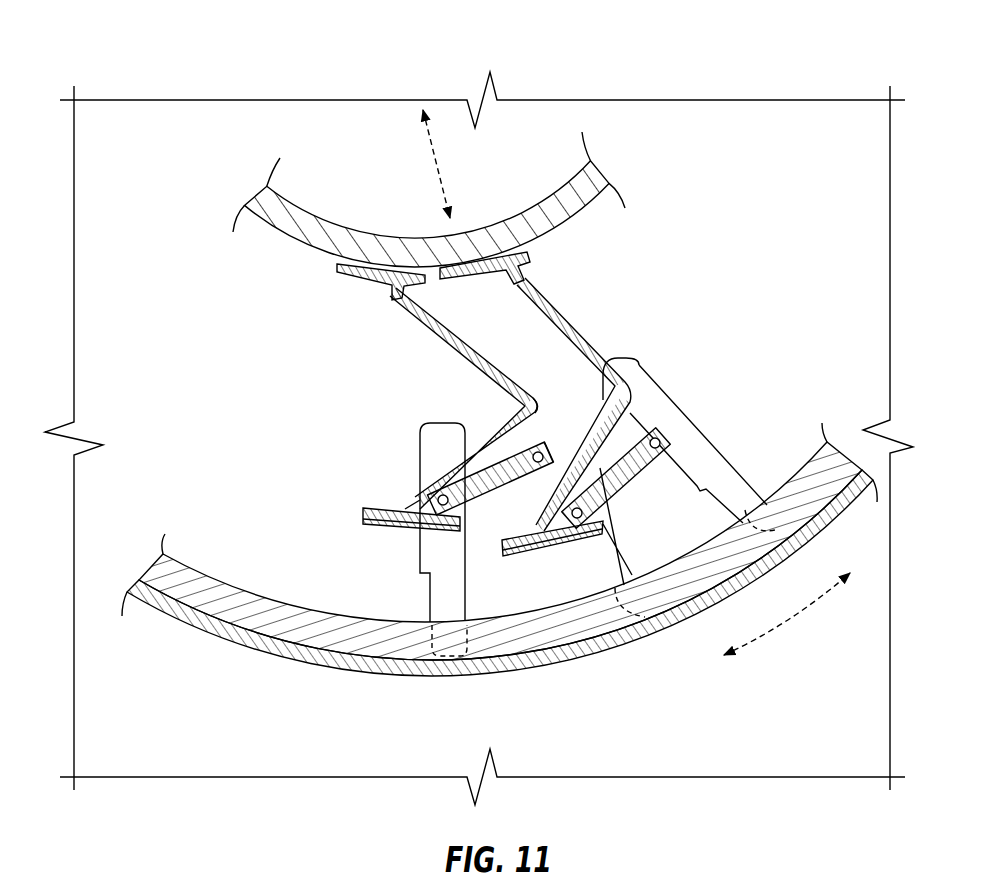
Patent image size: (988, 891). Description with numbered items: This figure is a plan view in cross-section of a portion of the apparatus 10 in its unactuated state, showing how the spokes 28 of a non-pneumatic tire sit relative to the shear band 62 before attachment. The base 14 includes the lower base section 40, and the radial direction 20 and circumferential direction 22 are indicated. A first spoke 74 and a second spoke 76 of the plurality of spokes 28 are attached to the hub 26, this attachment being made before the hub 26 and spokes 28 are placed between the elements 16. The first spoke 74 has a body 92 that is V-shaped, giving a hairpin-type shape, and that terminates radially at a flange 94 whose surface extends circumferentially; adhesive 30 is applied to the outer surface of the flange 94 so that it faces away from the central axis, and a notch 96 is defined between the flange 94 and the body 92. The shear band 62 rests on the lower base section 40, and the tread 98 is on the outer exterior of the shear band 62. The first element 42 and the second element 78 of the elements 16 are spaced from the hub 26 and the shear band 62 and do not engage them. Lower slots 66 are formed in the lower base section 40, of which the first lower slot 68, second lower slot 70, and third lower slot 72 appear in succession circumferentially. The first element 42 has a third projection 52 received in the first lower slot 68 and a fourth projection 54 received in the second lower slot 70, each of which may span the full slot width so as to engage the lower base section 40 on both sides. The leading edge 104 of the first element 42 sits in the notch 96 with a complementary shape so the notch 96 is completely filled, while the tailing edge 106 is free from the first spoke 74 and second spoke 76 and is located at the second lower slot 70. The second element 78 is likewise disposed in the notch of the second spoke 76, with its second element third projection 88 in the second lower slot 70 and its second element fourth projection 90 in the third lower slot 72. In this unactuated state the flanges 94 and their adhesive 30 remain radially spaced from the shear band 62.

The apparatus 10 is at (746, 64).
The base 14 is at (76, 312).
The elements 16 is at (515, 473).
The radial direction 20 is at (437, 170).
The circumferential direction 22 is at (793, 613).
The hub 26 is at (293, 228).
The spokes 28 is at (396, 292).
The adhesive 30 is at (388, 527).
The lower base section 40 is at (842, 287).
The first element 42 is at (482, 477).
The third projection 52 is at (440, 478).
The fourth projection 54 is at (534, 402).
The shear band 62 is at (808, 481).
The lower slots 66 is at (453, 610).
The first lower slot 68 is at (440, 432).
The second lower slot 70 is at (617, 573).
The third lower slot 72 is at (640, 383).
The first spoke 74 is at (440, 327).
The second spoke 76 is at (560, 315).
The second element 78 is at (622, 470).
The second element third projection 88 is at (560, 540).
The second element fourth projection 90 is at (660, 422).
The body 92 is at (448, 327).
The flange 94 is at (362, 516).
The notch 96 is at (425, 515).
The tread 98 is at (203, 633).
The leading edge 104 is at (428, 499).
The tailing edge 106 is at (552, 440).